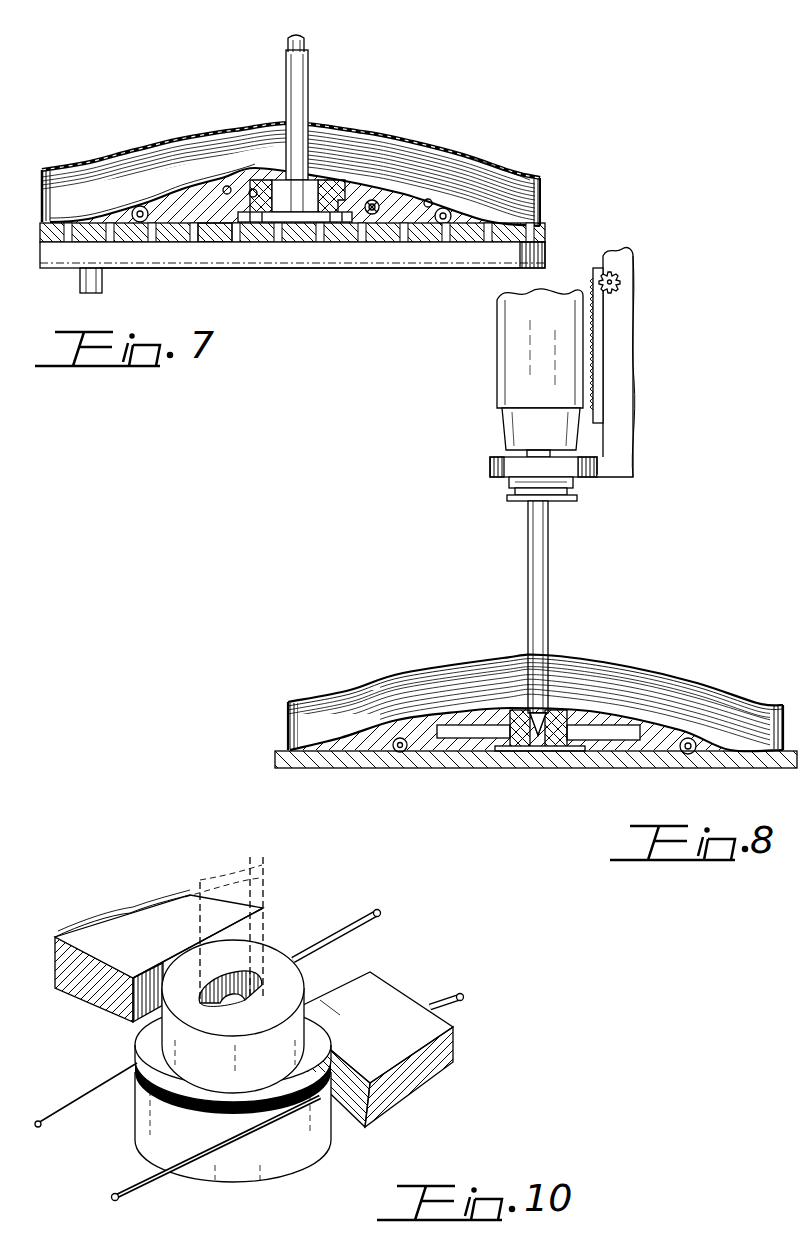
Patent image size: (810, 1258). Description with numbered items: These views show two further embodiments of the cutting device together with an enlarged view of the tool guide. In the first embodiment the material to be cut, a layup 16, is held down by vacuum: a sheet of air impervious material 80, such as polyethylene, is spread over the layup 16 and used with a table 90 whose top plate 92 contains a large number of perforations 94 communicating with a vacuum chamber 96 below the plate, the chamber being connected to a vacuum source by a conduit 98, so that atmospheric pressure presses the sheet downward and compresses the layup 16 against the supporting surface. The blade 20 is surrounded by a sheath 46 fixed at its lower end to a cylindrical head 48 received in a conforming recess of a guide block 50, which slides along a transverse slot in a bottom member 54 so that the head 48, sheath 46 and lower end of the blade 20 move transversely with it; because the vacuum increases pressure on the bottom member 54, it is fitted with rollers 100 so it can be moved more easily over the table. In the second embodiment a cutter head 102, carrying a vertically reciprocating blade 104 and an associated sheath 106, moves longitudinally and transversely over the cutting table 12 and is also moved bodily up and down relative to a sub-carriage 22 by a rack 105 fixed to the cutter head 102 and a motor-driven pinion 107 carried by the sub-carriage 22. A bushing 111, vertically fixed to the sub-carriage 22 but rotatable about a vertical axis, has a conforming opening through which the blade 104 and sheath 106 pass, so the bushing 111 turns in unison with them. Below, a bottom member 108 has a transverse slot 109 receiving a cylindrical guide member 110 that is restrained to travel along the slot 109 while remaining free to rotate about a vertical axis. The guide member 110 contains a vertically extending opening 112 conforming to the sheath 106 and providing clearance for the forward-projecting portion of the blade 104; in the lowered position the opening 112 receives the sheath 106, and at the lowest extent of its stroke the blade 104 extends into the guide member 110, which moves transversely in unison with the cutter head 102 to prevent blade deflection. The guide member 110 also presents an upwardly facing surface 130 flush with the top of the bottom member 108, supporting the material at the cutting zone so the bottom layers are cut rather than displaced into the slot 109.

In FIG. 8, the cutting table 12 is at (746, 784).
In FIG. 7, the layup 16 is at (520, 203).
In FIG. 8, the layup 16 is at (754, 713).
In FIG. 7, the blade 20 is at (296, 44).
In FIG. 8, the sub-carriage 22 is at (626, 342).
In FIG. 7, the sheath 46 is at (309, 100).
In FIG. 7, the cylindrical head 48 is at (296, 223).
In FIG. 7, the guide block 50 is at (324, 180).
In FIG. 7, the bottom member 54 is at (400, 200).
In FIG. 7, the sheet of air impervious material 80 is at (513, 180).
In FIG. 7, the table 90 is at (543, 252).
In FIG. 7, the top plate 92 is at (543, 231).
In FIG. 7, the perforations 94 is at (368, 240).
In FIG. 7, the vacuum chamber 96 is at (223, 256).
In FIG. 7, the conduit 98 is at (106, 278).
In FIG. 7, the rollers 100 is at (165, 222).
In FIG. 8, the cutter head 102 is at (503, 383).
In FIG. 8, the blade 104 is at (528, 568).
In FIG. 10, the blade 104 is at (250, 857).
In FIG. 8, the rack 105 is at (600, 415).
In FIG. 8, the sheath 106 is at (548, 590).
In FIG. 10, the sheath 106 is at (200, 884).
In FIG. 8, the pinion 107 is at (617, 279).
In FIG. 8, the bottom member 108 is at (452, 742).
In FIG. 10, the bottom member 108 is at (430, 1062).
In FIG. 8, the slot 109 is at (553, 710).
In FIG. 10, the guide member 110 is at (288, 1152).
In FIG. 8, the bushing 111 is at (576, 493).
In FIG. 10, the opening 112 is at (235, 990).
In FIG. 10, the upwardly facing surface 130 is at (298, 973).